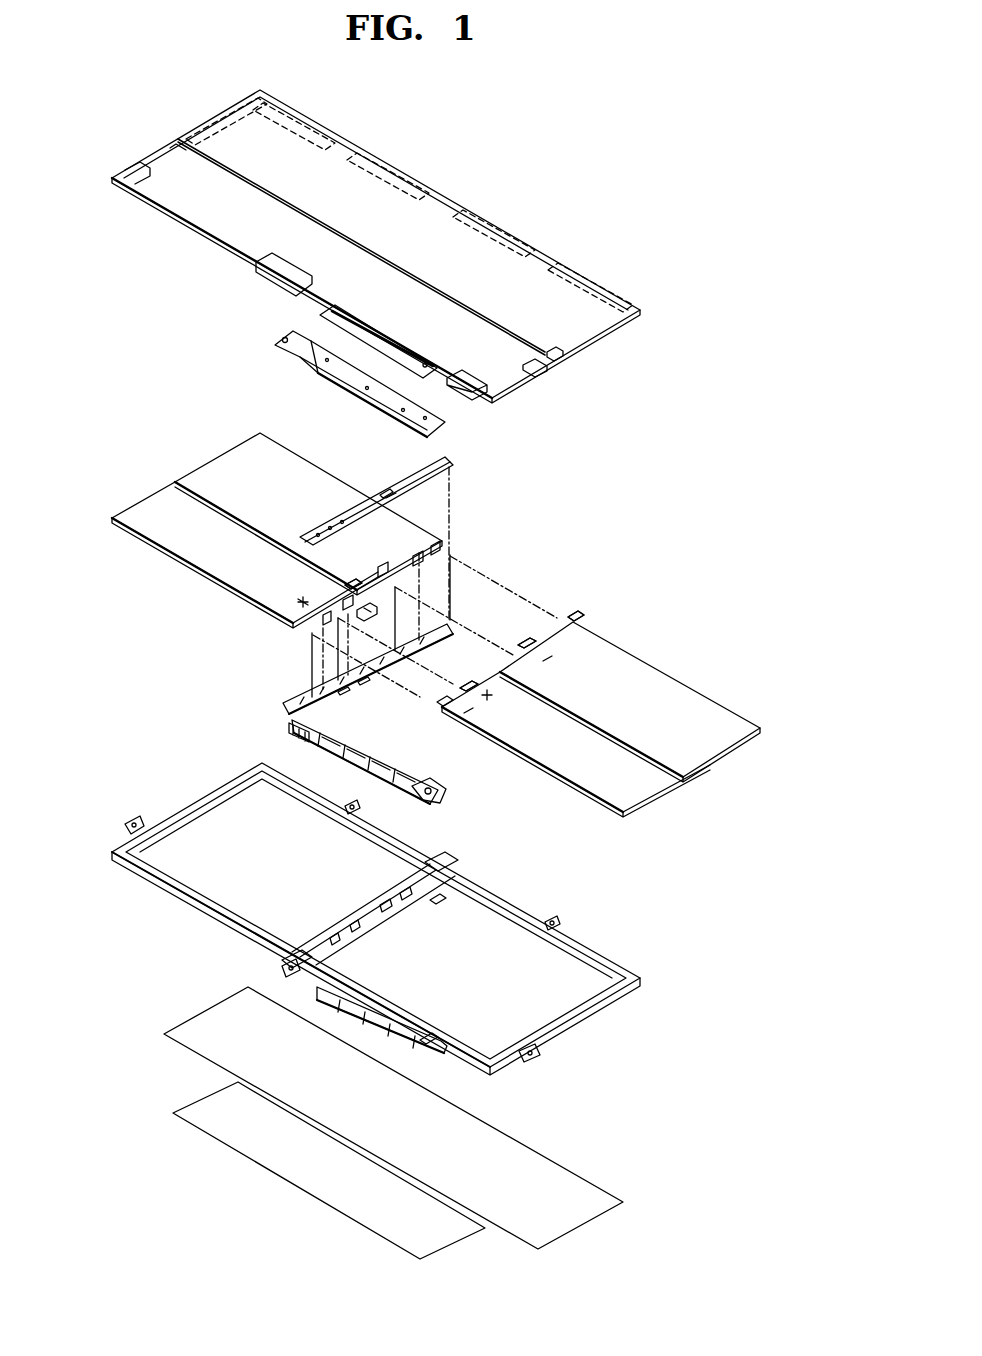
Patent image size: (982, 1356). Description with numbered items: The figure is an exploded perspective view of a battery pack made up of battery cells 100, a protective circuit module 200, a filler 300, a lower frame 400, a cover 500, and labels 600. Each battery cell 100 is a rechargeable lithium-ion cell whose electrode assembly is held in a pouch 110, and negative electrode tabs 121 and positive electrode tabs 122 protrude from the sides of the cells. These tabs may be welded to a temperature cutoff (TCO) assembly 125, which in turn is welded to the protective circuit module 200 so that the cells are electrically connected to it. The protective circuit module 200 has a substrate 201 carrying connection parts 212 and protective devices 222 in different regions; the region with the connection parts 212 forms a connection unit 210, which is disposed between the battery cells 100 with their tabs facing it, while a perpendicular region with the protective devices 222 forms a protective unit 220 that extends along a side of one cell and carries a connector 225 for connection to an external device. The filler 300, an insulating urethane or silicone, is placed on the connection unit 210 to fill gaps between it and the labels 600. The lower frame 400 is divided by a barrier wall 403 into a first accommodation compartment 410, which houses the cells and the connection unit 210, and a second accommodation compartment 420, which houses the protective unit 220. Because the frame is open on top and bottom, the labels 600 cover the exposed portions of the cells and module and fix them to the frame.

The battery cells 100 is at (205, 450).
The pouch 110 is at (660, 693).
The negative electrode tabs 121 is at (350, 586).
The positive electrode tabs 122 is at (303, 603).
The temperature cutoff (TCO) assembly 125 is at (385, 612).
The protective circuit module 200 is at (172, 665).
The substrate 201 is at (437, 800).
The connection unit 210 is at (310, 687).
The connection parts 212 is at (363, 703).
The protective unit 220 is at (337, 758).
The protective devices 222 is at (417, 783).
The connector 225 is at (291, 723).
The filler 300 is at (450, 460).
The lower frame 400 is at (638, 962).
The barrier wall 403 is at (430, 1040).
The first accommodation compartment 410 is at (285, 845).
The second accommodation compartment 420 is at (380, 1032).
The cover 500 is at (270, 335).
The labels 600 is at (620, 296).